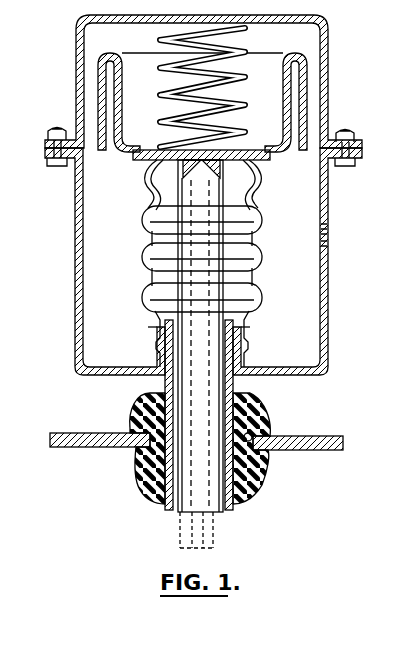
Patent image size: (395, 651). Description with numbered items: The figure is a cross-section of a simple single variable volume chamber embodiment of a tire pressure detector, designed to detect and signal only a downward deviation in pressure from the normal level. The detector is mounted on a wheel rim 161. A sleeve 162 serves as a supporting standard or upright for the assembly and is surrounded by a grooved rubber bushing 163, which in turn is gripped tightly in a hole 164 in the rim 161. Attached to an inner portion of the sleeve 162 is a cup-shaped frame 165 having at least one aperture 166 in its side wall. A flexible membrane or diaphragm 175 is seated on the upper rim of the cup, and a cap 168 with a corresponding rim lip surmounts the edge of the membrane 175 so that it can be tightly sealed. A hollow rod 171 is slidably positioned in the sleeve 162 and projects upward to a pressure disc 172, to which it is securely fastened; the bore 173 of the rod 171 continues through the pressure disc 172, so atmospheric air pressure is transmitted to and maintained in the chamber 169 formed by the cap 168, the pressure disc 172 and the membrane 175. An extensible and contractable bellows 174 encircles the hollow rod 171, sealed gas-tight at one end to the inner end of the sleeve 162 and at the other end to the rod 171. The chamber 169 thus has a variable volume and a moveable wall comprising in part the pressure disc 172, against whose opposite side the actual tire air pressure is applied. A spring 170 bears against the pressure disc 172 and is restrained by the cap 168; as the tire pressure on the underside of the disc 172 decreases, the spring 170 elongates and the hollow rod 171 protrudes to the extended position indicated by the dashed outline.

The wheel rim 161 is at (288, 450).
The sleeve 162 is at (233, 508).
The grooved rubber bushing 163 is at (253, 470).
The hole 164 is at (252, 434).
The frame 165 is at (327, 323).
The aperture 166 is at (328, 240).
The cap 168 is at (329, 40).
The chamber 169 is at (136, 50).
The spring 170 is at (165, 121).
The hollow rod 171 is at (213, 512).
The pressure disc 172 is at (262, 164).
The bore 173 is at (182, 520).
The bellows 174 is at (262, 274).
The flexible membrane 175 is at (96, 156).